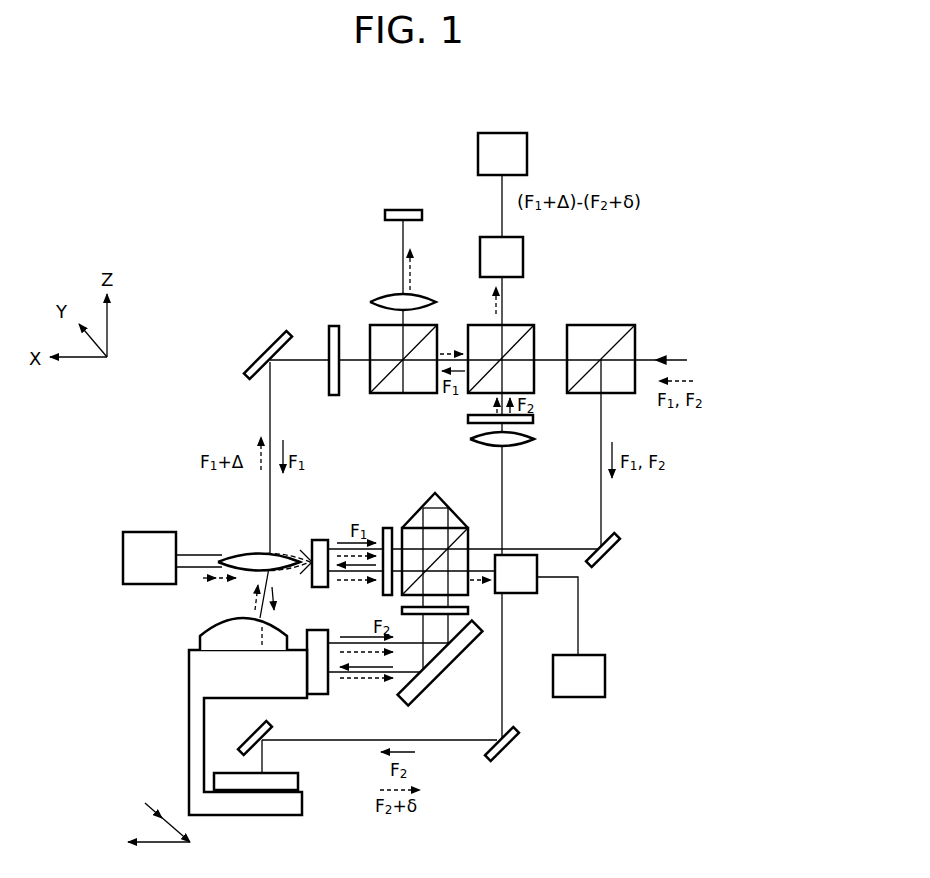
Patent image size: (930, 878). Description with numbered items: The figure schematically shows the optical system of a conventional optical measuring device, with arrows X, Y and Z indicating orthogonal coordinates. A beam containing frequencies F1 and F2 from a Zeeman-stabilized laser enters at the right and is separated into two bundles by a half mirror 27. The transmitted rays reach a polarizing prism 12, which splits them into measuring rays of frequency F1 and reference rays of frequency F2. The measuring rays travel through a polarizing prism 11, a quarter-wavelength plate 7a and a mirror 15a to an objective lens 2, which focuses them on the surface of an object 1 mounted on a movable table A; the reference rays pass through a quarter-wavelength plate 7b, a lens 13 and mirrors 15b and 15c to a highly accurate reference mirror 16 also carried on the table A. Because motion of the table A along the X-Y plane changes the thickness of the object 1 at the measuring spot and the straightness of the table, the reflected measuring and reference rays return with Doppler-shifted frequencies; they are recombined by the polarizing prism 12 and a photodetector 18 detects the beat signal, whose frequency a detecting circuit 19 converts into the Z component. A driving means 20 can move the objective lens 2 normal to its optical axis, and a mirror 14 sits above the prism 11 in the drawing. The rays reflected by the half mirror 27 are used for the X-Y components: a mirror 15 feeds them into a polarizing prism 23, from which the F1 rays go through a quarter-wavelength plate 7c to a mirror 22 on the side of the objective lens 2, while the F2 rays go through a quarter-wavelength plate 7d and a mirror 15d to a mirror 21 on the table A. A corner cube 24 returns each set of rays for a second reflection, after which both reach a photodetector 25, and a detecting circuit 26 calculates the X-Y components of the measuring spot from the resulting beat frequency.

The object to be measured 1 is at (200, 642).
The objective lens 2 is at (258, 550).
The quarter-wavelength plate 7a is at (333, 326).
The quarter-wavelength plate 7b is at (533, 419).
The quarter-wavelength plate 7c is at (388, 528).
The quarter-wavelength plate 7d is at (468, 611).
The polarizing prism 11 is at (404, 395).
The polarizing prism 12 is at (524, 325).
The lens 13 is at (390, 296).
The reference mirror 14 is at (415, 210).
The mirror 15 is at (615, 540).
The mirror 15a is at (260, 356).
The mirror 15b is at (515, 740).
The mirror 15c is at (268, 727).
The mirror 15d is at (447, 678).
The reference mirror 16 is at (298, 781).
The photodetector 18 is at (523, 256).
The detecting circuit 19 is at (527, 150).
The driving means 20 is at (135, 532).
The mirror 21 is at (318, 630).
The mirror 22 is at (320, 540).
The polarizing prism 23 is at (470, 538).
The corner cube 24 is at (445, 503).
The photodetector 25 is at (523, 593).
The detecting circuit 26 is at (605, 680).
The half mirror 27 is at (635, 338).
The movable table A is at (189, 737).